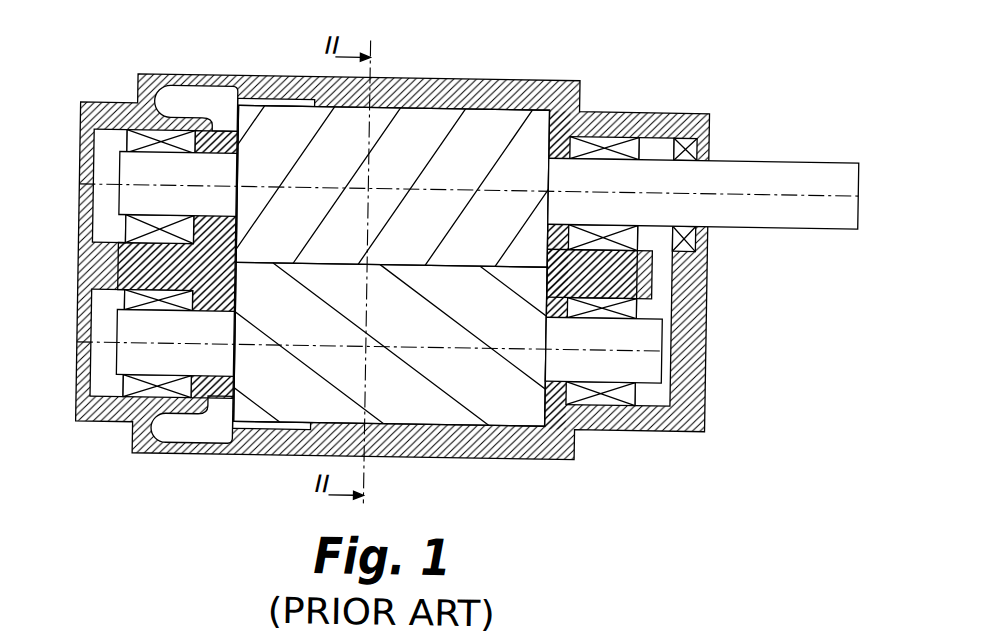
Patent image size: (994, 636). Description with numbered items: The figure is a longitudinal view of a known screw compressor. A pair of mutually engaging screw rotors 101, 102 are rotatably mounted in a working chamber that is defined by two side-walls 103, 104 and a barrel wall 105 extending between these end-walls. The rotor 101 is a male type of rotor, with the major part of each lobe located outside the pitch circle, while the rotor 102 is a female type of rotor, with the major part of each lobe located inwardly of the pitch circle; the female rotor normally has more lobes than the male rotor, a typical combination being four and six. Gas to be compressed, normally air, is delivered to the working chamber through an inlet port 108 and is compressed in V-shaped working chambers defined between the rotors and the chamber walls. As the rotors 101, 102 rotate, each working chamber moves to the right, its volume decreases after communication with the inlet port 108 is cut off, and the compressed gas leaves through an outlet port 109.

The male screw rotor 101 is at (422, 138).
The female screw rotor 102 is at (418, 393).
The side-wall 103 is at (236, 379).
The side-wall 104 is at (545, 391).
The barrel wall 105 is at (497, 80).
The inlet port 108 is at (227, 109).
The outlet port 109 is at (570, 248).